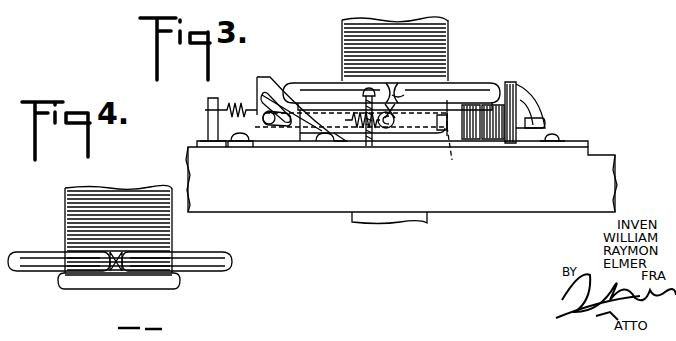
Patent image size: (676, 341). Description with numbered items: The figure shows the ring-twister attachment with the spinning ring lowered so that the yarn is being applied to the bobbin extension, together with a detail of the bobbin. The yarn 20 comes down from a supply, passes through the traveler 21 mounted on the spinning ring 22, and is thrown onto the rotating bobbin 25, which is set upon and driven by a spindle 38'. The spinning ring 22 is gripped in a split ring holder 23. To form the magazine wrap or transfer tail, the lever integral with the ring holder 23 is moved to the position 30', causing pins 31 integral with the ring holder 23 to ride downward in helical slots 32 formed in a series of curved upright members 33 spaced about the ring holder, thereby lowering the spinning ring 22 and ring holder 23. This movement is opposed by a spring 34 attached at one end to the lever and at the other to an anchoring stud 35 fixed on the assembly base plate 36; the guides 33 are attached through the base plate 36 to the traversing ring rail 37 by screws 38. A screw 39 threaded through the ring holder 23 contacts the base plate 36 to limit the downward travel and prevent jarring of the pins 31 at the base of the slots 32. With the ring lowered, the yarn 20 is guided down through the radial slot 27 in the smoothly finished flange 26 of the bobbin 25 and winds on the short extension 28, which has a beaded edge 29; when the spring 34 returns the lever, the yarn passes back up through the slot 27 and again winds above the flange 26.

In FIG. 3, the yarn 20 is at (393, 96).
In FIG. 3, the traveler 21 is at (471, 108).
In FIG. 3, the spinning ring 22 is at (488, 108).
In FIG. 3, the ring holder 23 is at (313, 110).
In FIG. 3, the bobbin 25 is at (341, 43).
In FIG. 4, the bobbin 25 is at (112, 196).
In FIG. 3, the flange 26 is at (288, 82).
In FIG. 4, the flange 26 is at (200, 260).
In FIG. 3, the radial slot 27 is at (406, 110).
In FIG. 4, the radial slot 27 is at (118, 270).
In FIG. 3, the extension 28 is at (363, 142).
In FIG. 4, the extension 28 is at (173, 279).
In FIG. 4, the beaded edge 29 is at (148, 290).
In FIG. 3, the lever position 30' is at (378, 150).
In FIG. 3, the pins 31 is at (270, 128).
In FIG. 3, the helical slots 32 is at (291, 127).
In FIG. 3, the curved upright members 33 is at (262, 77).
In FIG. 3, the spring 34 is at (226, 106).
In FIG. 3, the anchoring stud 35 is at (208, 114).
In FIG. 3, the assembly base plate 36 is at (196, 142).
In FIG. 3, the ring rail 37 is at (200, 170).
In FIG. 3, the screws 38 is at (396, 167).
In FIG. 3, the spindle 38' is at (390, 234).
In FIG. 3, the screw 39 is at (362, 140).